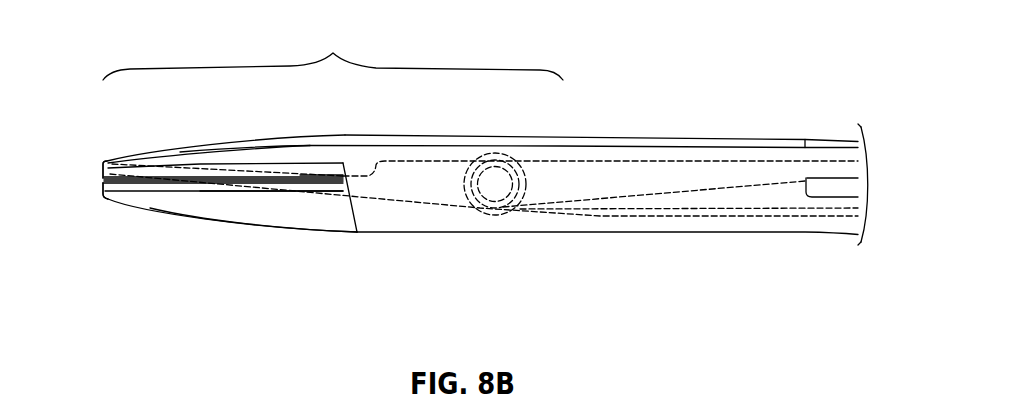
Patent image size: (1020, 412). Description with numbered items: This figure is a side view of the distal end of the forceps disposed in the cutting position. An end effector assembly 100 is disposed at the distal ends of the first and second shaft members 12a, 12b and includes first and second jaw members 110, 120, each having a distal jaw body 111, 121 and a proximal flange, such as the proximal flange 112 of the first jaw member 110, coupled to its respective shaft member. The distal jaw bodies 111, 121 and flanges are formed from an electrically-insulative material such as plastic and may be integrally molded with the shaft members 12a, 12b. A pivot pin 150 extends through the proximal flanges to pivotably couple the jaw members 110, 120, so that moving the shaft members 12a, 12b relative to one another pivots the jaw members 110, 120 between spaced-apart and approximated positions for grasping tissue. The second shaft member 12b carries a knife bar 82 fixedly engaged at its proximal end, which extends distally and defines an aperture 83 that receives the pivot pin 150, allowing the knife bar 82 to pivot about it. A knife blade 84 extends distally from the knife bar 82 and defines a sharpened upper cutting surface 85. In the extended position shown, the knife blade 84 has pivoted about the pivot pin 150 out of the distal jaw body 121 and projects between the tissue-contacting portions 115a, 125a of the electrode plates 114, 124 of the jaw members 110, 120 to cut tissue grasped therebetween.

The end effector assembly 100 is at (333, 54).
The first jaw member 110 is at (127, 147).
The distal jaw body 111 is at (290, 157).
The proximal flange 112 is at (601, 233).
The electrode plate 114 is at (322, 175).
The tissue-contacting portion 115a is at (103, 175).
The second jaw member 120 is at (121, 208).
The distal jaw body 121 is at (179, 217).
The electrode plate 124 is at (290, 193).
The tissue-contacting portion 125a is at (103, 183).
The knife bar 82 is at (697, 174).
The aperture 83 is at (480, 200).
The knife blade 84 is at (330, 197).
The sharpened upper cutting surface 85 is at (150, 157).
The pivot pin 150 is at (500, 190).
The first shaft member 12a is at (818, 233).
The second shaft member 12b is at (818, 140).